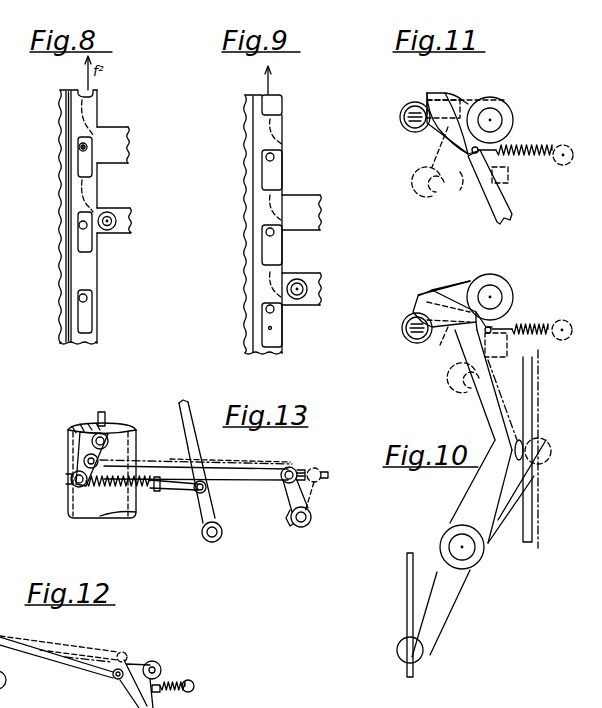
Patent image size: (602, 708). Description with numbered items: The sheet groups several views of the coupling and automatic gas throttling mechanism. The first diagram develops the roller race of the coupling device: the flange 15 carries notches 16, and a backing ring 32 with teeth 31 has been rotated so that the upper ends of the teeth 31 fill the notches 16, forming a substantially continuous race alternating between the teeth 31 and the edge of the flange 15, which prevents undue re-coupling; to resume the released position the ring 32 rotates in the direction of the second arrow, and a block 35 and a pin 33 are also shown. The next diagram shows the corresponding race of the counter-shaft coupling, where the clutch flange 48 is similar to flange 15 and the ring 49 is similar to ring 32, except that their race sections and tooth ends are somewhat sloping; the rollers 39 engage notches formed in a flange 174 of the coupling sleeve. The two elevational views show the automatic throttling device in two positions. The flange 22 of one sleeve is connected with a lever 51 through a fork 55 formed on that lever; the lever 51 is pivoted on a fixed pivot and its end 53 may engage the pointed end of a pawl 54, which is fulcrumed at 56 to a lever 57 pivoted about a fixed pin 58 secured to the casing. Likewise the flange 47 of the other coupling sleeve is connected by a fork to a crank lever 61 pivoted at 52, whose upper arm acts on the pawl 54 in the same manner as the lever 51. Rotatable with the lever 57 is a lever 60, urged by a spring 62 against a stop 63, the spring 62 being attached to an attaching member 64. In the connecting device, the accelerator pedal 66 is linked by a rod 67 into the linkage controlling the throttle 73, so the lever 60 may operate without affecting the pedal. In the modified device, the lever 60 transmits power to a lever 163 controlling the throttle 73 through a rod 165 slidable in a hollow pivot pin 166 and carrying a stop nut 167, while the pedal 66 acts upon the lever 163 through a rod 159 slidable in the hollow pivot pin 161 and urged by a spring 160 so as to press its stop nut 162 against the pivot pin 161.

In FIG. 8, the flange 15 is at (88, 176).
In FIG. 8, the notches 16 is at (93, 296).
In FIG. 8, the teeth 31 is at (105, 118).
In FIG. 8, the backing ring 32 is at (73, 246).
In FIG. 8, the pin 33 is at (81, 149).
In FIG. 8, the block 35 is at (124, 156).
In FIG. 9, the rollers 39 is at (300, 287).
In FIG. 9, the clutch flange 48 is at (290, 103).
In FIG. 9, the ring 49 is at (271, 179).
In FIG. 9, the flange 174 is at (310, 219).
In FIG. 10, the flange 22 is at (522, 503).
In FIG. 10, the flange 47 is at (406, 600).
In FIG. 11, the lever 51 is at (497, 220).
In FIG. 10, the lever 51 is at (500, 510).
In FIG. 10, the pivot 52 is at (452, 540).
In FIG. 10, the end of lever 53 is at (478, 332).
In FIG. 11, the pawl 54 is at (447, 127).
In FIG. 10, the pawl 54 is at (441, 300).
In FIG. 10, the fork 55 is at (540, 452).
In FIG. 11, the fulcrum 56 is at (402, 125).
In FIG. 10, the fulcrum 56 is at (403, 326).
In FIG. 11, the lever 57 is at (467, 106).
In FIG. 10, the lever 57 is at (462, 287).
In FIG. 13, the lever 57 is at (289, 520).
In FIG. 12, the lever 57 is at (140, 666).
In FIG. 11, the fixed pin 58 is at (498, 121).
In FIG. 10, the fixed pin 58 is at (497, 296).
In FIG. 13, the fixed pin 58 is at (311, 517).
In FIG. 12, the fixed pin 58 is at (162, 670).
In FIG. 11, the lever 60 is at (441, 187).
In FIG. 10, the lever 60 is at (492, 328).
In FIG. 13, the lever 60 is at (290, 496).
In FIG. 12, the lever 60 is at (170, 688).
In FIG. 10, the crank lever 61 is at (480, 483).
In FIG. 11, the spring 62 is at (515, 150).
In FIG. 10, the spring 62 is at (540, 318).
In FIG. 11, the stop 63 is at (510, 177).
In FIG. 10, the stop 63 is at (513, 353).
In FIG. 11, the attaching member 64 is at (563, 155).
In FIG. 10, the attaching member 64 is at (563, 340).
In FIG. 12, the attaching member 64 is at (191, 692).
In FIG. 13, the accelerator pedal 66 is at (182, 413).
In FIG. 12, the rod 67 is at (44, 654).
In FIG. 13, the throttle 73 is at (104, 412).
In FIG. 13, the rod 159 is at (158, 491).
In FIG. 13, the spring 160 is at (115, 495).
In FIG. 13, the hollow pivot pin 161 is at (114, 493).
In FIG. 13, the stop nut 162 is at (72, 481).
In FIG. 13, the lever 163 is at (86, 449).
In FIG. 13, the rod 165 is at (154, 466).
In FIG. 13, the hollow pivot pin 166 is at (291, 467).
In FIG. 13, the stop nut 167 is at (316, 468).